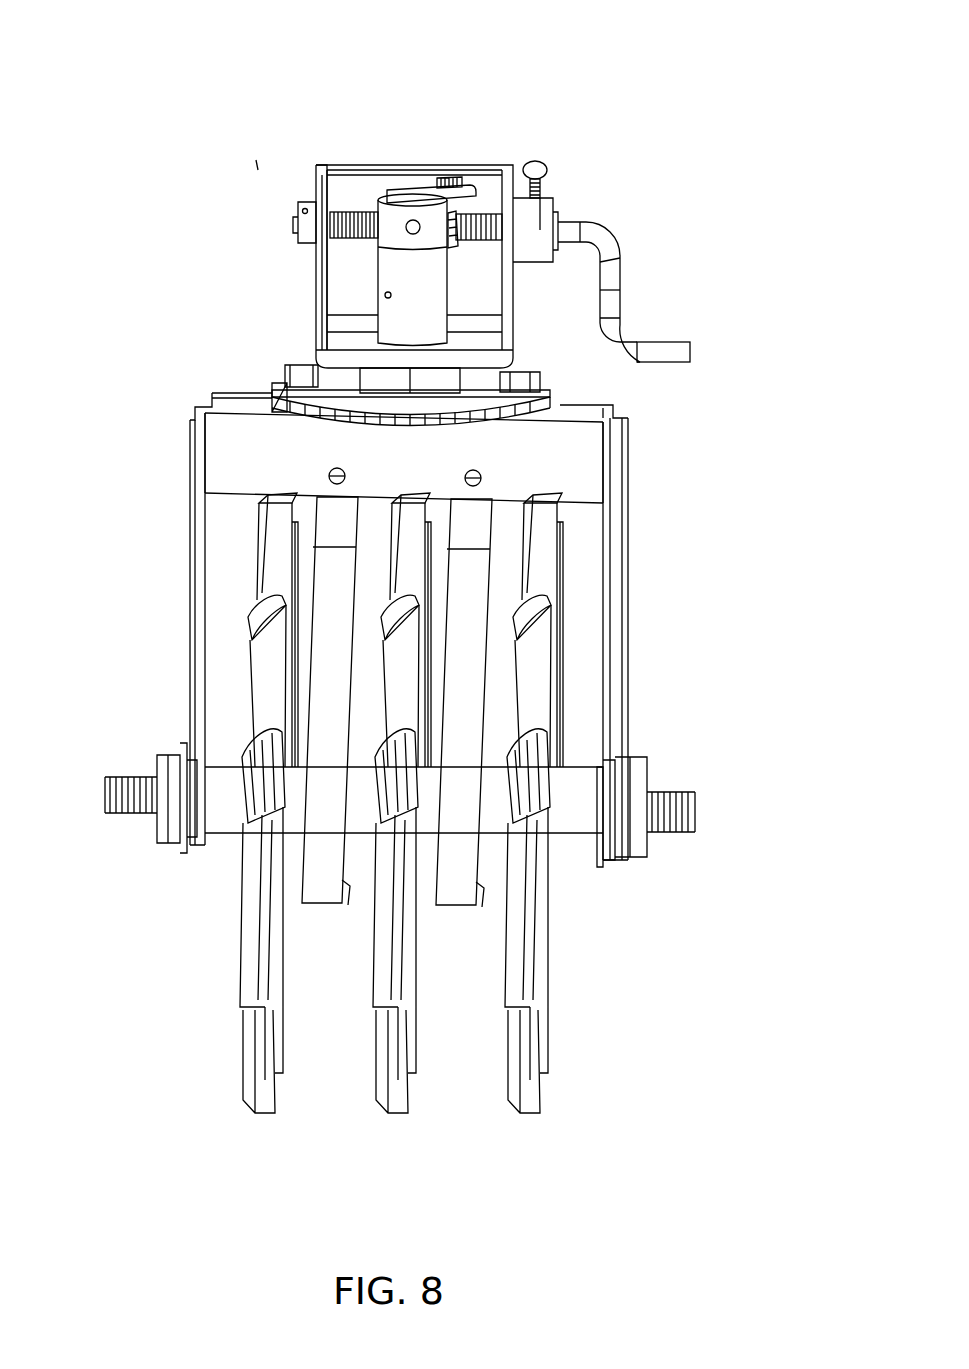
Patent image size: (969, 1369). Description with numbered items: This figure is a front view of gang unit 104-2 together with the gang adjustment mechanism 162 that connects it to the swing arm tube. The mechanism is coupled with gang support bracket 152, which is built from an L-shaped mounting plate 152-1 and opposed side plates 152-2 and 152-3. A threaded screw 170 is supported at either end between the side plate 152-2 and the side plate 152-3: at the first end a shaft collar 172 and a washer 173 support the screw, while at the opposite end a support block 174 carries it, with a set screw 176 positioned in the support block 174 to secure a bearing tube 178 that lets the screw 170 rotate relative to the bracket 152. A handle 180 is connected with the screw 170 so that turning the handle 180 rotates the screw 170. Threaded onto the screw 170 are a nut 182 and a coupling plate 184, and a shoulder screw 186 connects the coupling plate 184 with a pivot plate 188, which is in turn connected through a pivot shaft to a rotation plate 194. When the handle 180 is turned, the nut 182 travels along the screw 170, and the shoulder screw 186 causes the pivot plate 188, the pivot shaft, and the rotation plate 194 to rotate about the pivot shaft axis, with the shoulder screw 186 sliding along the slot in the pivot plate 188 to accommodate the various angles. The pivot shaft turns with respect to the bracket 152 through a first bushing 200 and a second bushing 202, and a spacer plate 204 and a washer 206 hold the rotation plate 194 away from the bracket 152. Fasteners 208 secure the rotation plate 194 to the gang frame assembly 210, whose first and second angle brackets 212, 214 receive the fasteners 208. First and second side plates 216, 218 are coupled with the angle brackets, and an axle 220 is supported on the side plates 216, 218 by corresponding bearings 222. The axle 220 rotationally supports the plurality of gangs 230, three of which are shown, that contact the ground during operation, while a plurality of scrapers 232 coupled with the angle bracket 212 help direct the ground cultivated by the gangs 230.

The gang unit 104-2 is at (665, 1005).
The gang support bracket 152 is at (485, 148).
The L-shaped mounting plate 152-1 is at (345, 195).
The side plate 152-2 is at (322, 276).
The side plate 152-3 is at (580, 310).
The gang adjustment mechanism 162 is at (425, 170).
The threaded screw 170 is at (560, 280).
The shaft collar 172 is at (298, 211).
The washer 173 is at (258, 162).
The support block 174 is at (536, 198).
The set screw 176 is at (533, 162).
The bearing tube 178 is at (545, 213).
The handle 180 is at (700, 330).
The nut 182 is at (500, 322).
The coupling plate 184 is at (560, 226).
The shoulder screw 186 is at (455, 160).
The pivot plate 188 is at (390, 185).
The rotation plate 194 is at (285, 385).
The first bushing 200 is at (390, 227).
The second bushing 202 is at (410, 300).
The spacer plate 204 is at (605, 418).
The washer 206 is at (300, 400).
The fasteners 208 is at (300, 370).
The gang frame assembly 210 is at (660, 500).
The first angle bracket 212 is at (220, 465).
The second angle bracket 214 is at (240, 395).
The first side plate 216 is at (195, 630).
The second side plate 218 is at (612, 612).
The axle 220 is at (222, 835).
The bearings 222 is at (170, 760).
The gangs 230 is at (265, 1135).
The scrapers 232 is at (322, 940).